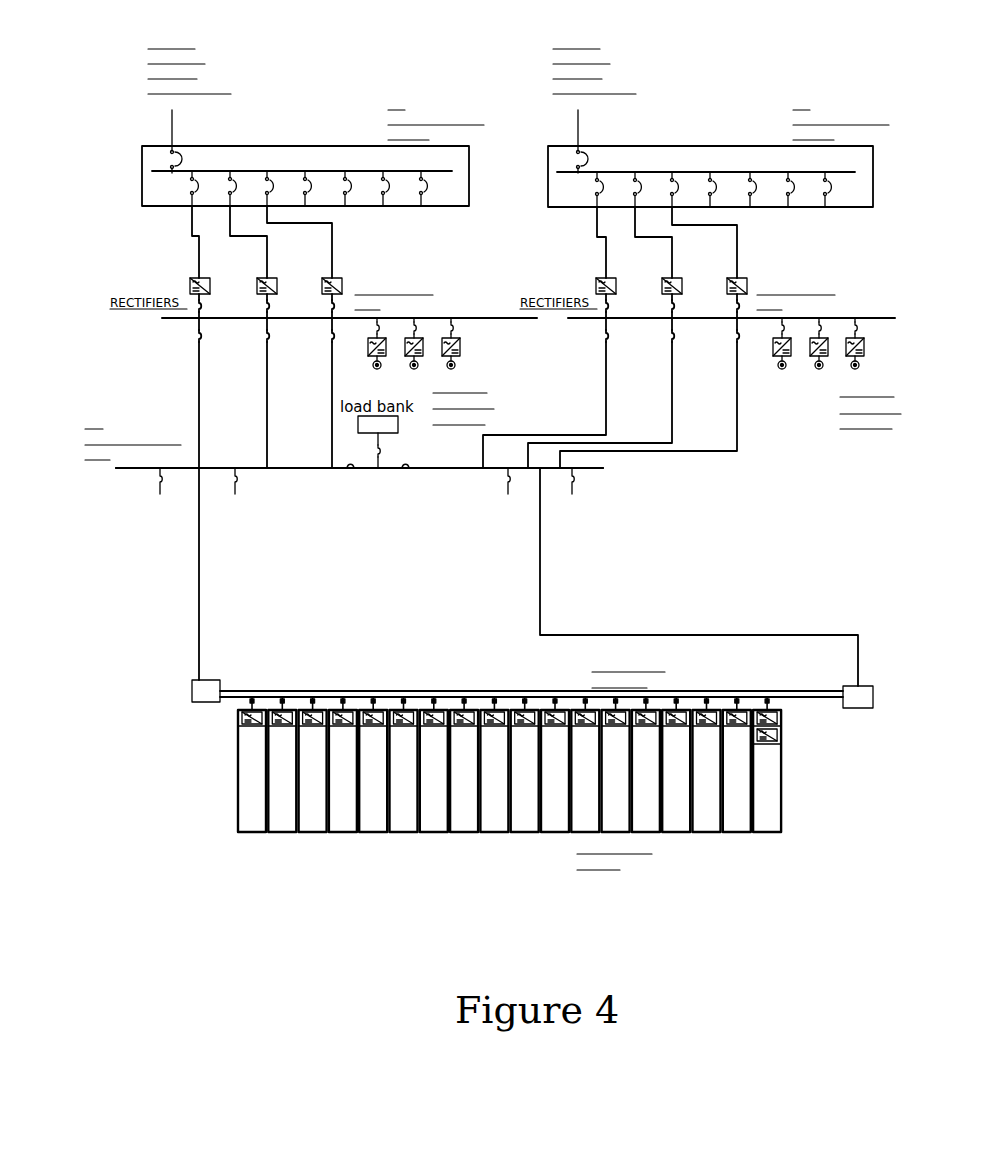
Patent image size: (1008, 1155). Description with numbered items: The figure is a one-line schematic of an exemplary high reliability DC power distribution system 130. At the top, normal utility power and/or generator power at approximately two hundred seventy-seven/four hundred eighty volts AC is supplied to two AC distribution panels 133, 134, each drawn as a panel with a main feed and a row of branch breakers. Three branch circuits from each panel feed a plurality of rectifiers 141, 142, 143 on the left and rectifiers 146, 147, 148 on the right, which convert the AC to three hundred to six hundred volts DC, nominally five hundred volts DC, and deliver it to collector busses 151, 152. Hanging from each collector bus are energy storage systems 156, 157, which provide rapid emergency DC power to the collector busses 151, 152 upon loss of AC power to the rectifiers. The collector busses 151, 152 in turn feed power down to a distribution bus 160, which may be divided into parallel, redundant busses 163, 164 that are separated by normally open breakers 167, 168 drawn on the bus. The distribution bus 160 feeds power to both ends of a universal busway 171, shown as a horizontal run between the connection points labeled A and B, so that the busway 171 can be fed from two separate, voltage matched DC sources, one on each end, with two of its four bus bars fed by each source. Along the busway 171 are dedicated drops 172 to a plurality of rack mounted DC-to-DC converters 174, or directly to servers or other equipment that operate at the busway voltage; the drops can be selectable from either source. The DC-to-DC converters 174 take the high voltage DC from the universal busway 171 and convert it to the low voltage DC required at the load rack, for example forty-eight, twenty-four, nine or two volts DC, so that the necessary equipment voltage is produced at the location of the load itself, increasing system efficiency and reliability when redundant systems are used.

The DC power distribution system 130 is at (146, 838).
The distribution panel 133 is at (307, 155).
The distribution panel 134 is at (682, 157).
The rectifier 141 is at (200, 287).
The rectifier 142 is at (268, 287).
The rectifier 143 is at (333, 286).
The rectifier 146 is at (608, 288).
The rectifier 147 is at (675, 287).
The rectifier 148 is at (745, 287).
The collector bus 151 is at (440, 317).
The collector bus 152 is at (856, 317).
The energy storage system 156 is at (492, 354).
The energy storage system 157 is at (790, 396).
The distribution bus 160 is at (277, 468).
The redundant bus 163 is at (127, 468).
The redundant bus 164 is at (587, 468).
The normally open breaker 167 is at (352, 470).
The normally open breaker 168 is at (405, 470).
The universal busway 171 is at (498, 690).
The dedicated drop 172 is at (238, 703).
The rack mounted DC-to-DC converter 174 is at (791, 736).